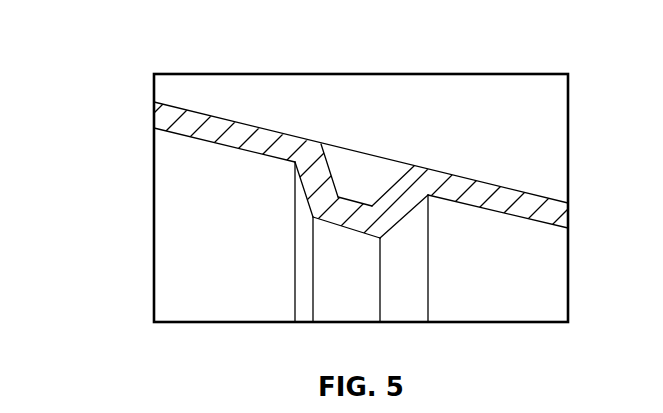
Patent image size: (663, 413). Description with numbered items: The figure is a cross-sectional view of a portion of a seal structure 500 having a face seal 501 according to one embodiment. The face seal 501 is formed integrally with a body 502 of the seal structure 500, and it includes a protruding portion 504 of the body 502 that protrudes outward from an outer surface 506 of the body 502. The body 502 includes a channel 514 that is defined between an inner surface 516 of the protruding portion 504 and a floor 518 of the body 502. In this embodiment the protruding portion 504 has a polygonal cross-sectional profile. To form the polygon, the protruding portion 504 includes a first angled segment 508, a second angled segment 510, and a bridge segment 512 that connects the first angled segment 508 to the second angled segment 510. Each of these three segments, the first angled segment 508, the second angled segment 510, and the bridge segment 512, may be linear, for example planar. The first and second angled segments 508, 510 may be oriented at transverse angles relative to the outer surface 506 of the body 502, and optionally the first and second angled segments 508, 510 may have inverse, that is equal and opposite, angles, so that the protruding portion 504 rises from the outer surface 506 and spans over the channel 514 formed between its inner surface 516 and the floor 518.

The seal structure 500 is at (214, 56).
The face seal 501 is at (351, 290).
The body 502 is at (201, 112).
The protruding portion 504 is at (333, 260).
The outer surface 506 is at (215, 190).
The first angled segment 508 is at (352, 200).
The second angled segment 510 is at (392, 180).
The bridge segment 512 is at (358, 222).
The channel 514 is at (368, 196).
The inner surface 516 is at (357, 192).
The floor 518 is at (413, 165).